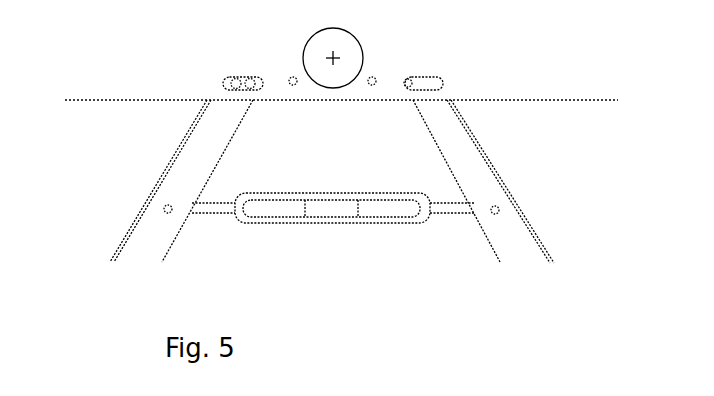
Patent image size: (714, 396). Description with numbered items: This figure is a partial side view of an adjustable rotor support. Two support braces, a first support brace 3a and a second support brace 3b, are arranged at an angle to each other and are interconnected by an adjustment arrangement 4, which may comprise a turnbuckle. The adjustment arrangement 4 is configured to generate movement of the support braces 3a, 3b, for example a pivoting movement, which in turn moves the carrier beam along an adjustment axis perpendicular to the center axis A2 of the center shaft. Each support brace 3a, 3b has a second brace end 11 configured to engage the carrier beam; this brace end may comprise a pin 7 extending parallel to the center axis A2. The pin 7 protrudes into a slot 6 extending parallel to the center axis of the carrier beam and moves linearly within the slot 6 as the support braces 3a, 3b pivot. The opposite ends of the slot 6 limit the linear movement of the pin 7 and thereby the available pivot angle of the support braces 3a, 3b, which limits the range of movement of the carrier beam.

The center axis of the center shaft A2 is at (331, 58).
The second brace end 11 is at (198, 94).
The pin 7 is at (408, 83).
The slot 6 is at (406, 82).
The first support brace 3a is at (150, 240).
The second support brace 3b is at (513, 237).
The adjustment arrangement 4 is at (348, 250).